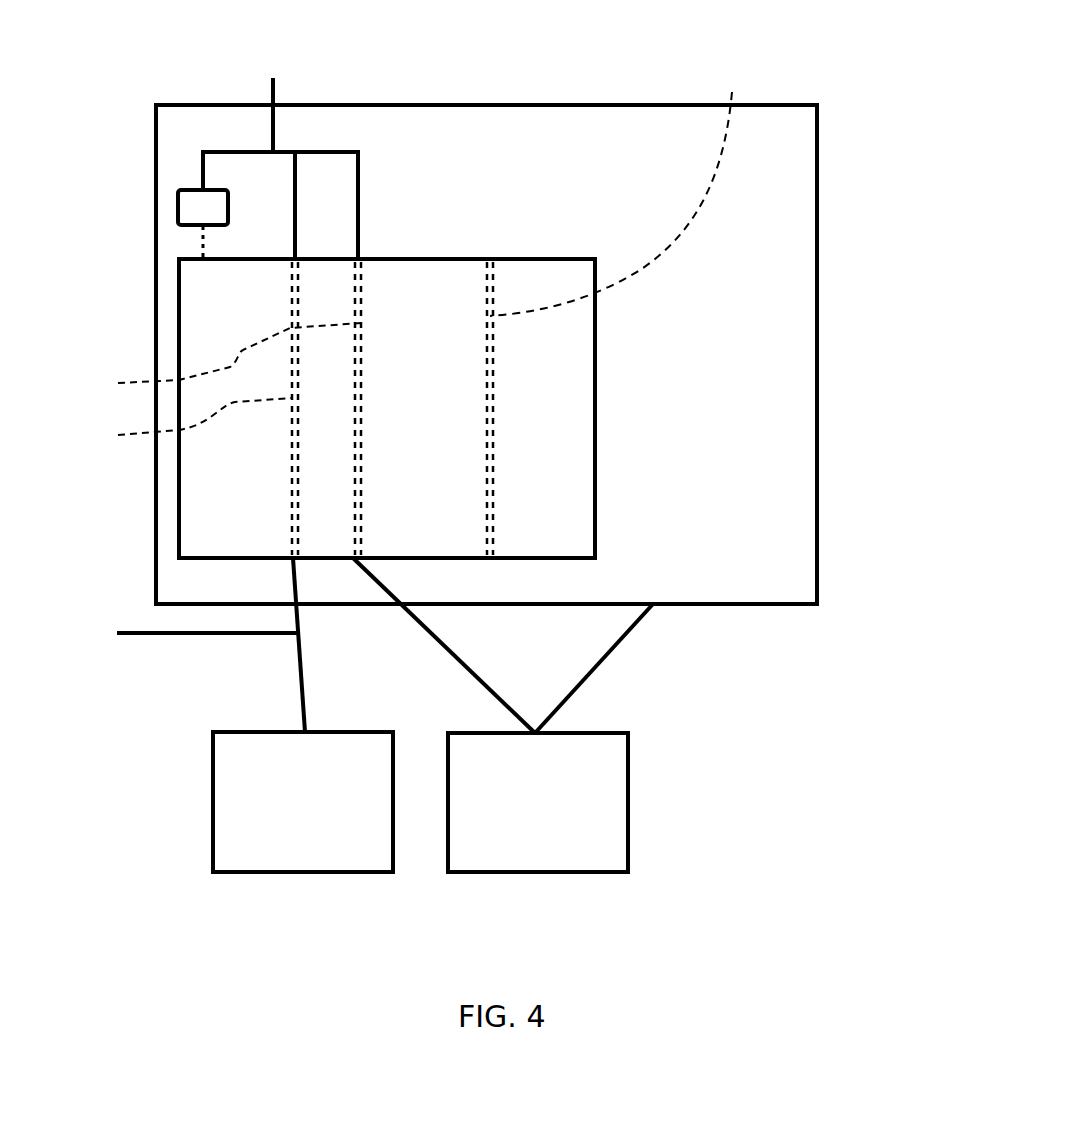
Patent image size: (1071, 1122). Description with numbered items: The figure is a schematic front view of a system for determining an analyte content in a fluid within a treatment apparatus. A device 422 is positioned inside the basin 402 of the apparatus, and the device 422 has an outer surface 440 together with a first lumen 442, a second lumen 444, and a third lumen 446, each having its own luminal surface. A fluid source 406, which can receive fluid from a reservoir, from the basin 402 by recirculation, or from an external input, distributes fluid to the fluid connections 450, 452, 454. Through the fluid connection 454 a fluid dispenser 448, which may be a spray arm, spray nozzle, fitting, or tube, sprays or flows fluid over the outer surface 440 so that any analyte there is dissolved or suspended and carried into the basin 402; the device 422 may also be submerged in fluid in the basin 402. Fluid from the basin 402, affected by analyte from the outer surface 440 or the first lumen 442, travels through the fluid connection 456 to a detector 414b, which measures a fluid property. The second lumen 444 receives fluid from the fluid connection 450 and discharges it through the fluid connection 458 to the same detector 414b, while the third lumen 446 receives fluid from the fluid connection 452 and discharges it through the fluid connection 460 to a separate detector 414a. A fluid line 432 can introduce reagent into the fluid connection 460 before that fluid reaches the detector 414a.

The basin 402 is at (815, 104).
The fluid source 406 is at (277, 128).
The detector 414a is at (213, 819).
The detector 414b is at (628, 857).
The device 422 is at (214, 460).
The fluid line 432 is at (152, 630).
The outer surface 440 is at (596, 460).
The first lumen 442 is at (623, 186).
The second lumen 444 is at (208, 360).
The third lumen 446 is at (173, 423).
The fluid dispenser 448 is at (178, 207).
The fluid connection 450 is at (358, 205).
The fluid connection 452 is at (293, 222).
The fluid connection 454 is at (200, 172).
The fluid connection 456 is at (630, 633).
The fluid connection 458 is at (490, 682).
The fluid connection 460 is at (298, 657).